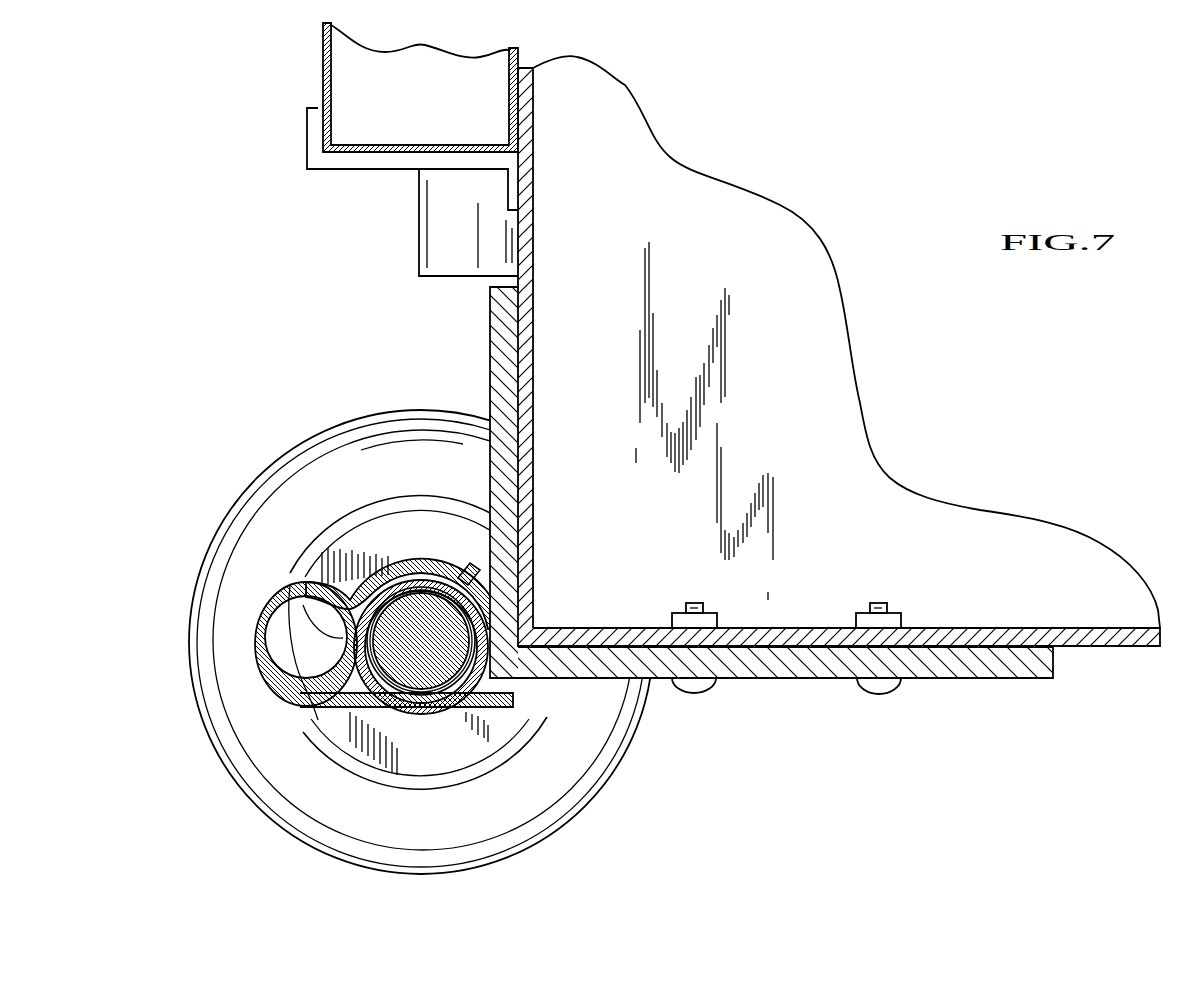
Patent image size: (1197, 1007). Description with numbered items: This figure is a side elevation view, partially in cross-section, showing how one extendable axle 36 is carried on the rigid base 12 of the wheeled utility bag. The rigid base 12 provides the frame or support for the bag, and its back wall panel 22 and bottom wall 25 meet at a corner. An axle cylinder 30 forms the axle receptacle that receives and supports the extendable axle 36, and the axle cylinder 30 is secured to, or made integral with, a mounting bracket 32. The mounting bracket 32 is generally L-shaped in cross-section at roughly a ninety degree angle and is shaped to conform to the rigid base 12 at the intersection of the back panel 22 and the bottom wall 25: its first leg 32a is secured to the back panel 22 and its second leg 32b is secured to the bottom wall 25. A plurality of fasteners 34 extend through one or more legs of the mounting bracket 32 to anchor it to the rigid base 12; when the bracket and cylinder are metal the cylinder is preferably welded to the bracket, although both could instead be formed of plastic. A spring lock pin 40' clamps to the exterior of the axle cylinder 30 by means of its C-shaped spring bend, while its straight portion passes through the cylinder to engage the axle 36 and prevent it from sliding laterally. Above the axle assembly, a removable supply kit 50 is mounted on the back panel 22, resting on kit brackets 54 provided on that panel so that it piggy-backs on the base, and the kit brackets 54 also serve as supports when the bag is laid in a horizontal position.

The rigid base 12 is at (806, 392).
The back wall panel 22 is at (527, 345).
The bottom wall 25 is at (1103, 647).
The axle cylinder 30 is at (310, 582).
The mounting bracket 32 is at (718, 540).
The first leg 32a is at (507, 392).
The second leg 32b is at (823, 668).
The fasteners 34 is at (878, 685).
The extendable axle 36 is at (397, 655).
The spring lock pin 40' is at (249, 644).
The supply kit 50 is at (352, 84).
The kit brackets 54 is at (310, 140).